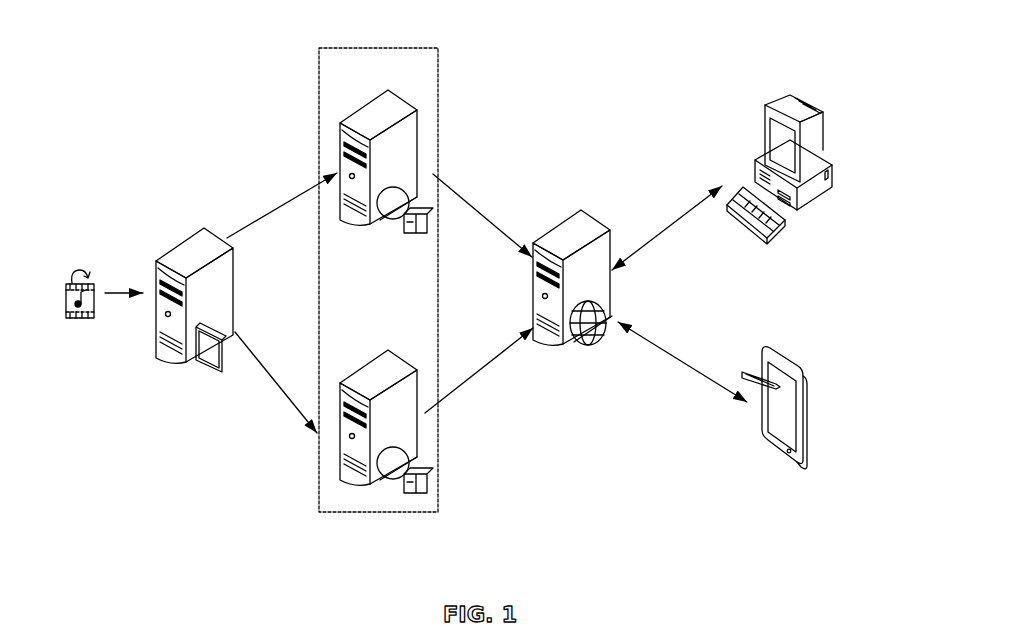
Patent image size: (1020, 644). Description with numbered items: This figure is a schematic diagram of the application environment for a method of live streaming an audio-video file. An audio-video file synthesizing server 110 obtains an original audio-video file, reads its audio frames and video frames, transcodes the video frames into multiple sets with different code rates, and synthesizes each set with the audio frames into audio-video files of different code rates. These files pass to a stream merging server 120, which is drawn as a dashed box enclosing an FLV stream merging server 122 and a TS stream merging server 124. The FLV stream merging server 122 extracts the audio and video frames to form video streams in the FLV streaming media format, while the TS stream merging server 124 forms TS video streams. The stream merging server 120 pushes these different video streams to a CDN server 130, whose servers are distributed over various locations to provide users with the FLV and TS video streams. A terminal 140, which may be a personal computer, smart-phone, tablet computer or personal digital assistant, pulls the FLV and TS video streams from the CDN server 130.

The audio-video file synthesizing server 110 is at (213, 292).
The stream merging server 120 is at (420, 48).
The FLV stream merging server 122 is at (372, 97).
The TS stream merging server 124 is at (372, 357).
The CDN server 130 is at (575, 228).
The terminal 140 is at (797, 110).